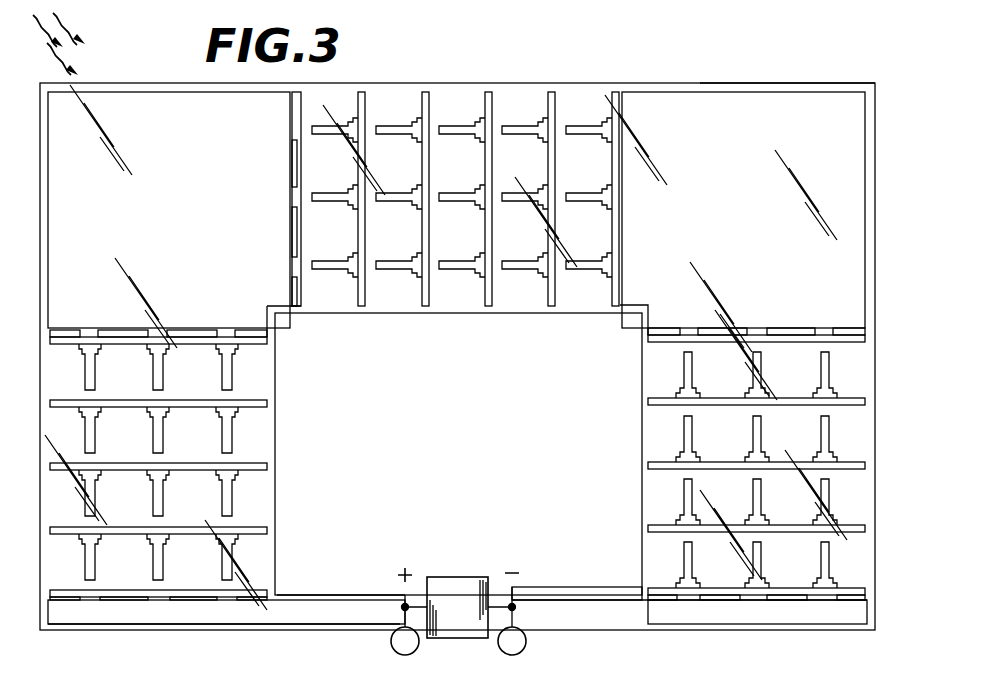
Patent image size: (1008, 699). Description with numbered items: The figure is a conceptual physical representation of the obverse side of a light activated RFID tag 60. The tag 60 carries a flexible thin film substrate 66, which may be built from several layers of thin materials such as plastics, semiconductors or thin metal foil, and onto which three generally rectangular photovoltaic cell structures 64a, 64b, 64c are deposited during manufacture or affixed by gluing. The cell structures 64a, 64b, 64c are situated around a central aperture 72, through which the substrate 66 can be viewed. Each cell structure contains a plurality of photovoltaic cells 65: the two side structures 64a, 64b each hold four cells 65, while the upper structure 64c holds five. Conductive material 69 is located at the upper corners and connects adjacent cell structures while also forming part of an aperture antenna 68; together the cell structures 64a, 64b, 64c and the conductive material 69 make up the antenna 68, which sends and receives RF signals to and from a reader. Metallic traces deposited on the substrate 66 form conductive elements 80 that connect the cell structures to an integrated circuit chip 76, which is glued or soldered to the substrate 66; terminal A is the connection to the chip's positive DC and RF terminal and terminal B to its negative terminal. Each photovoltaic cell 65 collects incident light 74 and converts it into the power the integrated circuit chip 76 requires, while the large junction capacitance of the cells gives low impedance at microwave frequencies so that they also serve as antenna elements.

The light activated RFID tag 60 is at (117, 637).
The photovoltaic cell structure 64a is at (141, 498).
The photovoltaic cell structure 64b is at (740, 489).
The photovoltaic cell structure 64c is at (474, 97).
The photovoltaic cell 65 is at (652, 527).
The flexible thin film substrate 66 is at (757, 83).
The aperture antenna 68 is at (703, 636).
The conductive material 69 is at (148, 218).
The aperture 72 is at (607, 357).
The light 74 is at (75, 15).
The integrated circuit chip 76 is at (460, 593).
The conductive elements 80 is at (347, 617).